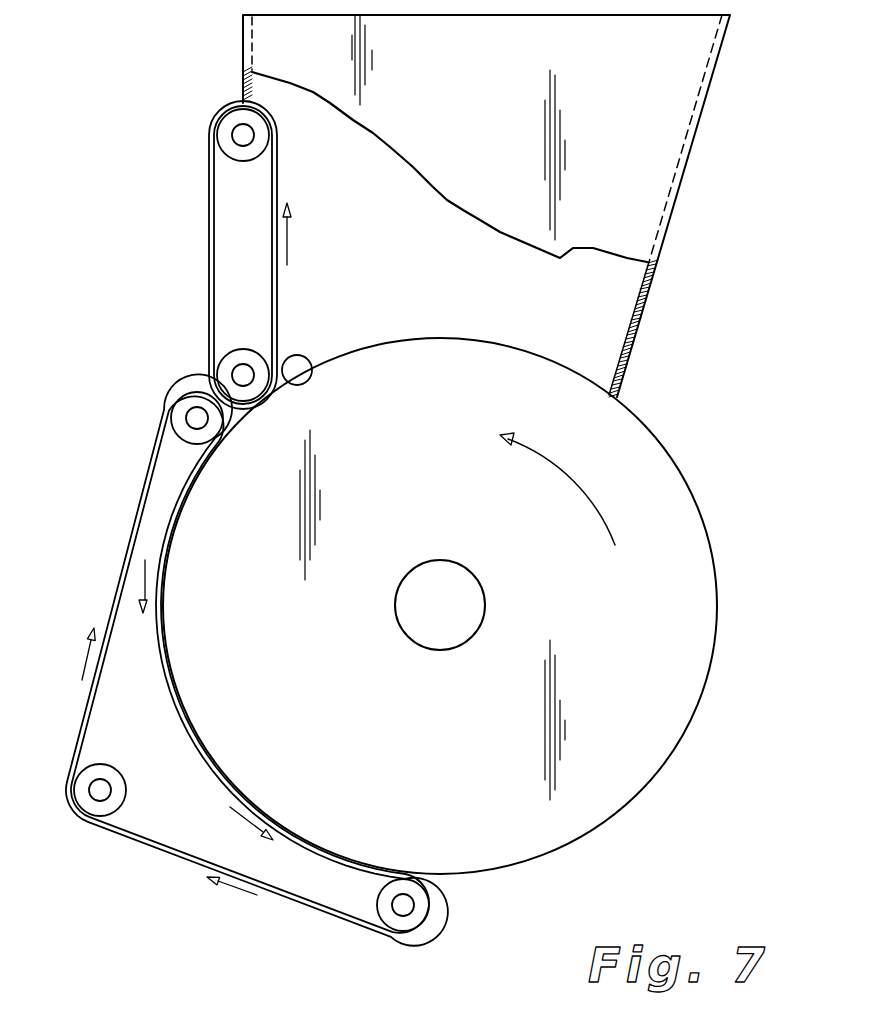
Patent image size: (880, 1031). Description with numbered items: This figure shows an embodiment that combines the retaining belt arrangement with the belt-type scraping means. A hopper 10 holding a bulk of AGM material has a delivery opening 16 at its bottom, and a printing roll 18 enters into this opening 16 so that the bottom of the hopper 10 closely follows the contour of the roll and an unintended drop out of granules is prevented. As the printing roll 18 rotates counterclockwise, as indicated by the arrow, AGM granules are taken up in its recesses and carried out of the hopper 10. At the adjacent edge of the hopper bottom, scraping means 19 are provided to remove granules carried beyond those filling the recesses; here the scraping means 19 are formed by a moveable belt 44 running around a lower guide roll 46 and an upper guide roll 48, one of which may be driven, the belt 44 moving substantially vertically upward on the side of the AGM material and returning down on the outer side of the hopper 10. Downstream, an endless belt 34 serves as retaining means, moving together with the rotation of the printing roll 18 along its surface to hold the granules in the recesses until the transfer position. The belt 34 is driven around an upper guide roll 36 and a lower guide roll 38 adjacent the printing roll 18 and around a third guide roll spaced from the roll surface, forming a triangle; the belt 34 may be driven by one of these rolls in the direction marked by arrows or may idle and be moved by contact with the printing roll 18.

The hopper 10 is at (667, 230).
The delivery opening 16 is at (310, 380).
The printing roll 18 is at (643, 737).
The scraping means 19 is at (168, 255).
The endless belt 34 is at (255, 693).
The upper guide roll 36 is at (196, 418).
The lower guide roll 38 is at (404, 906).
The belt 44 is at (212, 240).
The lower guide roll 46 is at (237, 365).
The upper guide roll 48 is at (241, 136).